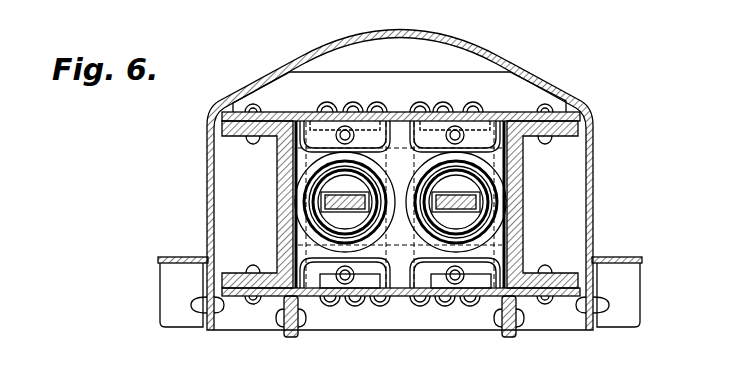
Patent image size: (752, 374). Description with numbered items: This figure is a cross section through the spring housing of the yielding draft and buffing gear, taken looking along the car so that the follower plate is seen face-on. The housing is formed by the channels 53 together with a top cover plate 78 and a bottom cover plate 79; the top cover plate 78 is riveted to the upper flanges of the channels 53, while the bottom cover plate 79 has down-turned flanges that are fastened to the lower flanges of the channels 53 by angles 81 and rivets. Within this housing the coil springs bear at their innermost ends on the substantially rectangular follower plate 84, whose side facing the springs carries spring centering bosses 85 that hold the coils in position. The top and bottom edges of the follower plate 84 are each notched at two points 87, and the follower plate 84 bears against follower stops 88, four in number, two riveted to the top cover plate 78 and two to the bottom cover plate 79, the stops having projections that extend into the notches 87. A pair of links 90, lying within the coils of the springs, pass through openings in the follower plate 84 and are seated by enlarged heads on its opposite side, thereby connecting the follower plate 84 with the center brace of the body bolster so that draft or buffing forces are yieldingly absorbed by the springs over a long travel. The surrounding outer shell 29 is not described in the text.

The housing shell 29 is at (594, 133).
The top cover plate 78 is at (524, 110).
The follower plate 84 is at (400, 160).
The spring centering bosses 85 is at (336, 185).
The channels 53 is at (313, 219).
The links 90 is at (300, 226).
The notches 87 is at (351, 112).
The follower stops 88 is at (323, 111).
The angles 81 is at (275, 303).
The bottom cover plate 79 is at (443, 298).